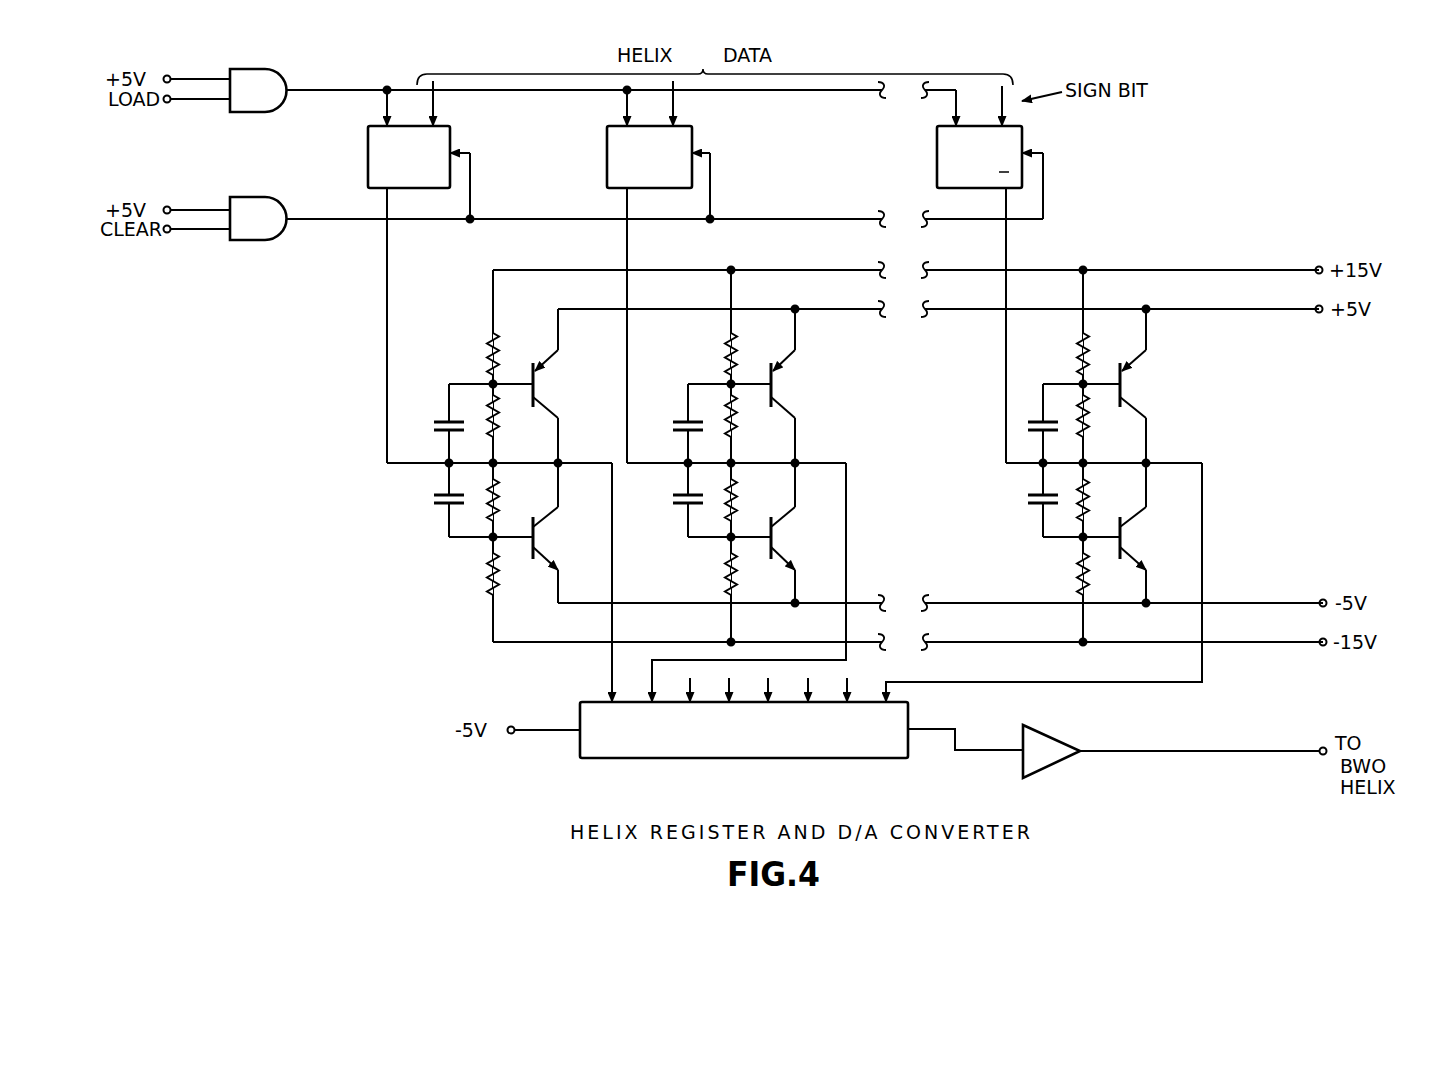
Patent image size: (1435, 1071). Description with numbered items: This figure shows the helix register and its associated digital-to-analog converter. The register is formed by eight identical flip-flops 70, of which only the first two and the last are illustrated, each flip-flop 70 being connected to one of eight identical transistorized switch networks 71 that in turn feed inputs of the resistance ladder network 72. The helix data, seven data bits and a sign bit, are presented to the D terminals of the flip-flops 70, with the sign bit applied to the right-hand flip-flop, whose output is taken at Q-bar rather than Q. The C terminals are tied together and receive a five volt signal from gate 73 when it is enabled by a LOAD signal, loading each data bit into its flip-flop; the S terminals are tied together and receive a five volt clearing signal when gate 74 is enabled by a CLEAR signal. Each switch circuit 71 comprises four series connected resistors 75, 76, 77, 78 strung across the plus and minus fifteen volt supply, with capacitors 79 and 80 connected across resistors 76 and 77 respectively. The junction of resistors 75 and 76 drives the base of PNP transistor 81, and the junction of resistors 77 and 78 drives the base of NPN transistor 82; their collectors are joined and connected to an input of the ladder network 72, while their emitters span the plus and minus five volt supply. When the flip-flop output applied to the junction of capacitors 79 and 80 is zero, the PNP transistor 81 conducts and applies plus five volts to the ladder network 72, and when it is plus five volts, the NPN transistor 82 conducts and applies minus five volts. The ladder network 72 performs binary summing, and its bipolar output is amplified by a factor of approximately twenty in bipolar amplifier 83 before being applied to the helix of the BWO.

The flip-flop 70 is at (368, 155).
The transistorized switch network 71 is at (792, 445).
The resistance ladder network 72 is at (823, 759).
The gate 73 is at (270, 113).
The gate 74 is at (250, 241).
The resistor 75 is at (487, 357).
The resistor 76 is at (500, 426).
The resistor 77 is at (500, 507).
The resistor 78 is at (500, 573).
The capacitor 79 is at (434, 422).
The capacitor 80 is at (437, 508).
The PNP transistor 81 is at (540, 379).
The NPN transistor 82 is at (540, 536).
The bipolar amplifier 83 is at (1037, 727).